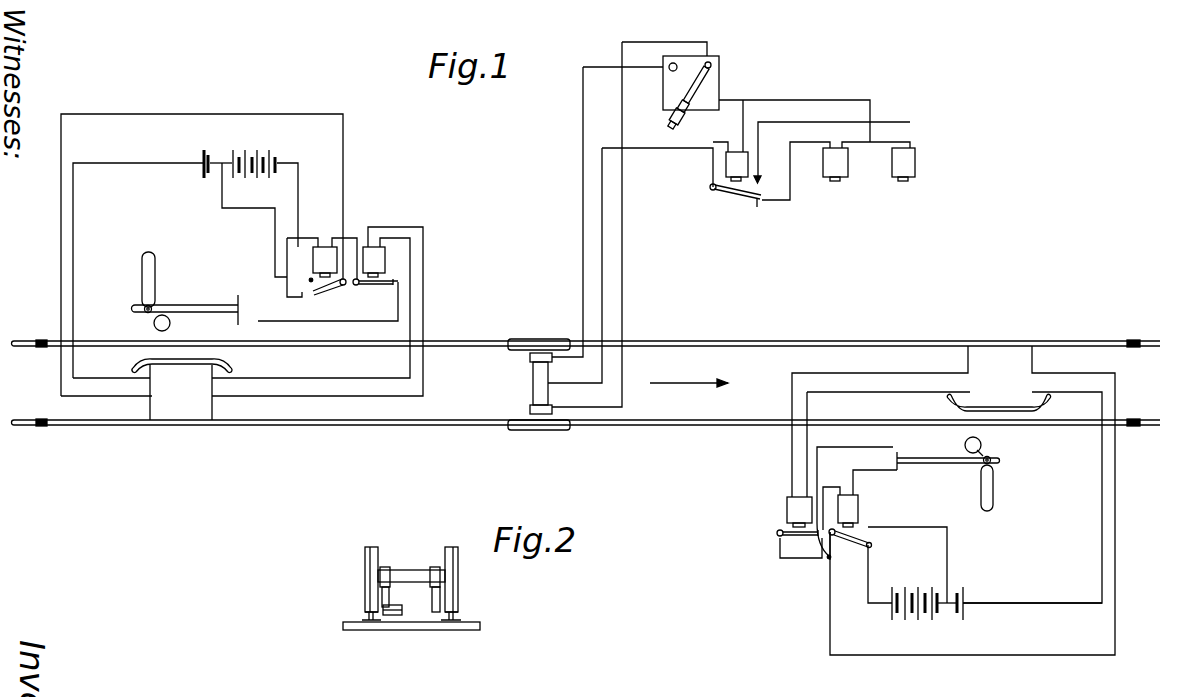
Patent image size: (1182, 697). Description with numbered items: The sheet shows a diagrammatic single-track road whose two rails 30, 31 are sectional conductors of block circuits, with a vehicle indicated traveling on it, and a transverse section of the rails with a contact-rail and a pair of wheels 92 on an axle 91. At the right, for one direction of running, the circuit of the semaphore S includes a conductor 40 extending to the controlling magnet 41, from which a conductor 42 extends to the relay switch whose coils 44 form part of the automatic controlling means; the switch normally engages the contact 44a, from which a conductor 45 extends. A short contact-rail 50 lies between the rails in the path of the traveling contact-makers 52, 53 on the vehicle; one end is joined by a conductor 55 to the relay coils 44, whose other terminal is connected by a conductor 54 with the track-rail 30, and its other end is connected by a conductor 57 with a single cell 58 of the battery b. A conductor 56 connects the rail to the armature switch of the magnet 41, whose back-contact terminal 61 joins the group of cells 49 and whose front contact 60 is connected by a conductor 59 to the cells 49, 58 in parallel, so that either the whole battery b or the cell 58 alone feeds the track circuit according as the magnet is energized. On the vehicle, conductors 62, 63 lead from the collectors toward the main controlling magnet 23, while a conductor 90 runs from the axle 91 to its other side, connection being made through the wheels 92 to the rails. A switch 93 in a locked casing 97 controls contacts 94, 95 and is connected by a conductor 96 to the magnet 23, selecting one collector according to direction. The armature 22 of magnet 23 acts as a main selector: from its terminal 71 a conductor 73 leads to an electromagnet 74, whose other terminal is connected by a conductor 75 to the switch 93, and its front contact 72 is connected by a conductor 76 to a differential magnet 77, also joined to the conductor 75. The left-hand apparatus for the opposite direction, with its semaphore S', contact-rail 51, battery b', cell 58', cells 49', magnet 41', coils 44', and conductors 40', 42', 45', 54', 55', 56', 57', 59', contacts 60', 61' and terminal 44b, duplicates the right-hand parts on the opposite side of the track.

In FIG. 1, the track-rail 30 is at (760, 339).
In FIG. 2, the track-rail 30 is at (458, 618).
In FIG. 1, the track-rail 31 is at (586, 413).
In FIG. 2, the track-rail 31 is at (362, 615).
In FIG. 1, the armature 22 is at (735, 208).
In FIG. 1, the main controlling electromagnet 23 is at (737, 166).
In FIG. 1, the conductor 40 is at (875, 483).
In FIG. 1, the electrical controlling device or magnet 41 is at (840, 508).
In FIG. 1, the conductor 42 is at (801, 558).
In FIG. 1, the relay coils 44 is at (779, 512).
In FIG. 1, the contact 44a is at (832, 558).
In FIG. 1, the terminal 44b is at (412, 263).
In FIG. 1, the conductor 45 is at (856, 493).
In FIG. 1, the cells of battery 49 is at (902, 582).
In FIG. 1, the contact-rail 50 is at (987, 404).
In FIG. 2, the contact-rail 50 is at (405, 606).
In FIG. 1, the contact-rail 51 is at (185, 366).
In FIG. 1, the traveling contact-maker 52 is at (530, 408).
In FIG. 2, the traveling contact-maker 52 is at (385, 630).
In FIG. 1, the traveling contact-maker 53 is at (530, 357).
In FIG. 2, the traveling contact-maker 53 is at (437, 612).
In FIG. 1, the conductor 54 is at (953, 500).
In FIG. 1, the conductor 55 is at (954, 497).
In FIG. 1, the conductor 56 is at (1040, 648).
In FIG. 1, the conductor 57 is at (1055, 590).
In FIG. 1, the single cell 58 is at (1029, 594).
In FIG. 1, the conductor 59 is at (909, 552).
In FIG. 1, the front contact 60 is at (882, 524).
In FIG. 1, the terminal 61 is at (864, 542).
In FIG. 1, the conductor 62 is at (622, 287).
In FIG. 1, the conductor 63 is at (583, 254).
In FIG. 1, the terminal 71 is at (758, 208).
In FIG. 1, the front contact 72 is at (760, 174).
In FIG. 1, the conductor 73 is at (796, 171).
In FIG. 1, the electromagnet 74 is at (835, 164).
In FIG. 1, the conductor 75 is at (840, 101).
In FIG. 1, the conductor 76 is at (806, 124).
In FIG. 1, the differential electrical controlling device or magnet 77 is at (903, 164).
In FIG. 1, the conductor 90 is at (638, 262).
In FIG. 1, the axle 91 is at (533, 383).
In FIG. 2, the axle 91 is at (412, 570).
In FIG. 1, the wheels 92 is at (533, 338).
In FIG. 2, the wheels 92 is at (365, 572).
In FIG. 1, the electric switch 93 is at (698, 90).
In FIG. 1, the contact 94 is at (710, 62).
In FIG. 1, the contact 95 is at (675, 63).
In FIG. 1, the conductor 96 is at (743, 125).
In FIG. 1, the locked casing 97 is at (720, 63).
In FIG. 1, the semaphore S is at (954, 474).
In FIG. 1, the semaphore S' is at (185, 291).
In FIG. 1, the battery b is at (947, 620).
In FIG. 1, the battery b' is at (254, 190).
In FIG. 1, the conductor 40' is at (272, 292).
In FIG. 1, the electrical controlling device or magnet 41' is at (322, 267).
In FIG. 1, the conductor 42' is at (363, 218).
In FIG. 1, the relay coils 44' is at (374, 262).
In FIG. 1, the conductor 45' is at (328, 302).
In FIG. 1, the cells of battery 49' is at (258, 191).
In FIG. 1, the conductor 54' is at (317, 321).
In FIG. 1, the conductor 55' is at (241, 309).
In FIG. 1, the conductor 56' is at (202, 267).
In FIG. 1, the conductor 57' is at (138, 264).
In FIG. 1, the single cell 58' is at (207, 176).
In FIG. 1, the conductor 59' is at (254, 220).
In FIG. 1, the front contact 60' is at (281, 267).
In FIG. 1, the terminal 61' is at (329, 297).